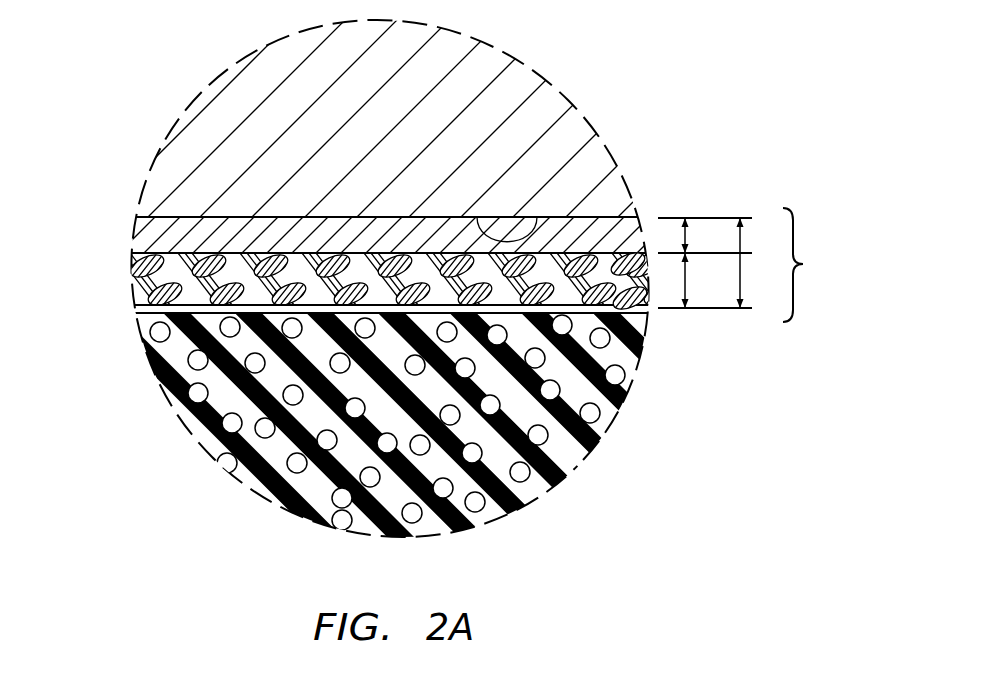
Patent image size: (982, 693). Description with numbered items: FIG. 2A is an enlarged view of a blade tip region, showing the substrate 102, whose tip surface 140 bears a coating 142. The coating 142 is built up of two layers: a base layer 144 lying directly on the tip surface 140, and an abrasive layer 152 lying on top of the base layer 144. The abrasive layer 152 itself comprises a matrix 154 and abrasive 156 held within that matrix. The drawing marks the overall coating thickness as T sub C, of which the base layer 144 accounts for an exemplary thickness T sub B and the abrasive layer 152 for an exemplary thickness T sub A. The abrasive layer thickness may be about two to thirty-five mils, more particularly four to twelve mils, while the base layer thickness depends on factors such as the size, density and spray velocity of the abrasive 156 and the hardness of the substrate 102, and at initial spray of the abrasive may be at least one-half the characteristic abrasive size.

The substrate body 102 is at (548, 98).
The tip surface 140 is at (543, 217).
The coating 142 is at (754, 265).
The base layer 144 is at (122, 221).
The abrasive layer 152 is at (145, 287).
The matrix 154 is at (612, 294).
The abrasive 156 is at (133, 310).